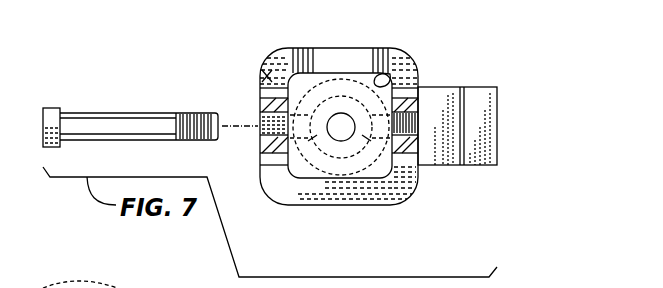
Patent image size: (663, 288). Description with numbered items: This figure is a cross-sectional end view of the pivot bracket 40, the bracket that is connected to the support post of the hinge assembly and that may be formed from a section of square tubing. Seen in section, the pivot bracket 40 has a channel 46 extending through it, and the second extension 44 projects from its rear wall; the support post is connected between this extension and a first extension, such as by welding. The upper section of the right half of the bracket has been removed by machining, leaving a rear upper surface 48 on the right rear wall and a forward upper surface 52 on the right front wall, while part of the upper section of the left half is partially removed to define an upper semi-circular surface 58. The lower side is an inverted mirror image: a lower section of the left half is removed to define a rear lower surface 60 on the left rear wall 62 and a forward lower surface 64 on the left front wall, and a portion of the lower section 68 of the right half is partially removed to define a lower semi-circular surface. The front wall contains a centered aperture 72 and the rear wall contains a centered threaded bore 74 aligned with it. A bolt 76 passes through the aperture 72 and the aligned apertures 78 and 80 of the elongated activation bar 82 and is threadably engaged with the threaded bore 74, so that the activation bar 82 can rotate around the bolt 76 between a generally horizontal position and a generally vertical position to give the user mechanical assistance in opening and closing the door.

The pivot bracket 40 is at (268, 52).
The second extension 44 is at (490, 113).
The channel 46 is at (299, 166).
The rear upper surface 48 is at (400, 82).
The forward upper surface 52 is at (272, 78).
The upper semi-circular surface 58 is at (343, 56).
The rear lower surface 60 is at (409, 195).
The left rear wall 62 is at (377, 75).
The forward lower surface 64 is at (273, 165).
The lower section 68 is at (335, 196).
The aperture 72 is at (263, 132).
The threaded bore 74 is at (418, 132).
The bolt 76 is at (50, 112).
The aperture 78 is at (315, 122).
The aperture 80 is at (361, 122).
The activation bar 82 is at (320, 72).